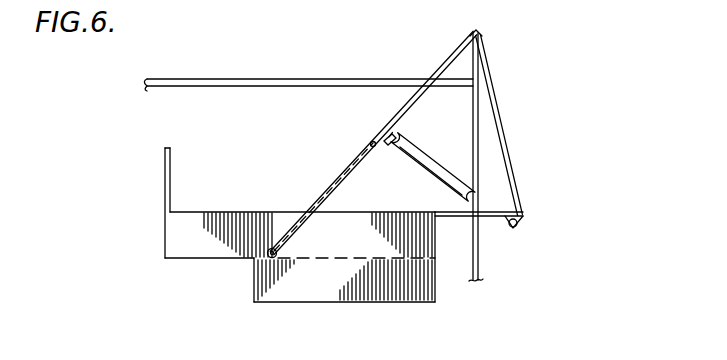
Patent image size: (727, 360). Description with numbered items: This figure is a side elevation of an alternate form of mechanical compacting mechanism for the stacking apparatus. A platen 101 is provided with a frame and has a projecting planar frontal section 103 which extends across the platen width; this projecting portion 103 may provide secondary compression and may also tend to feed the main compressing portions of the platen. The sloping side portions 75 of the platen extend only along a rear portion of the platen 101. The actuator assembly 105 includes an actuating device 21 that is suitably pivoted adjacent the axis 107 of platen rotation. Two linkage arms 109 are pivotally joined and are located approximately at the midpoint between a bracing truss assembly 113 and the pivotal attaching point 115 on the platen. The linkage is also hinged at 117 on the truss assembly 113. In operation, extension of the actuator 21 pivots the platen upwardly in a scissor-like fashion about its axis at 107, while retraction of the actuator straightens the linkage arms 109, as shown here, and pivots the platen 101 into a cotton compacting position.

The actuating device 21 is at (414, 150).
The sloping side portions 75 is at (408, 281).
The platen 101 is at (180, 247).
The projecting planar frontal section 103 is at (226, 266).
The actuator assembly 105 is at (392, 112).
The axis of platen rotation 107 is at (524, 217).
The linkage arms 109 is at (446, 64).
The bracing truss assembly 113 is at (480, 127).
The pivotal attaching point 115 is at (271, 247).
The hinge 117 is at (481, 33).